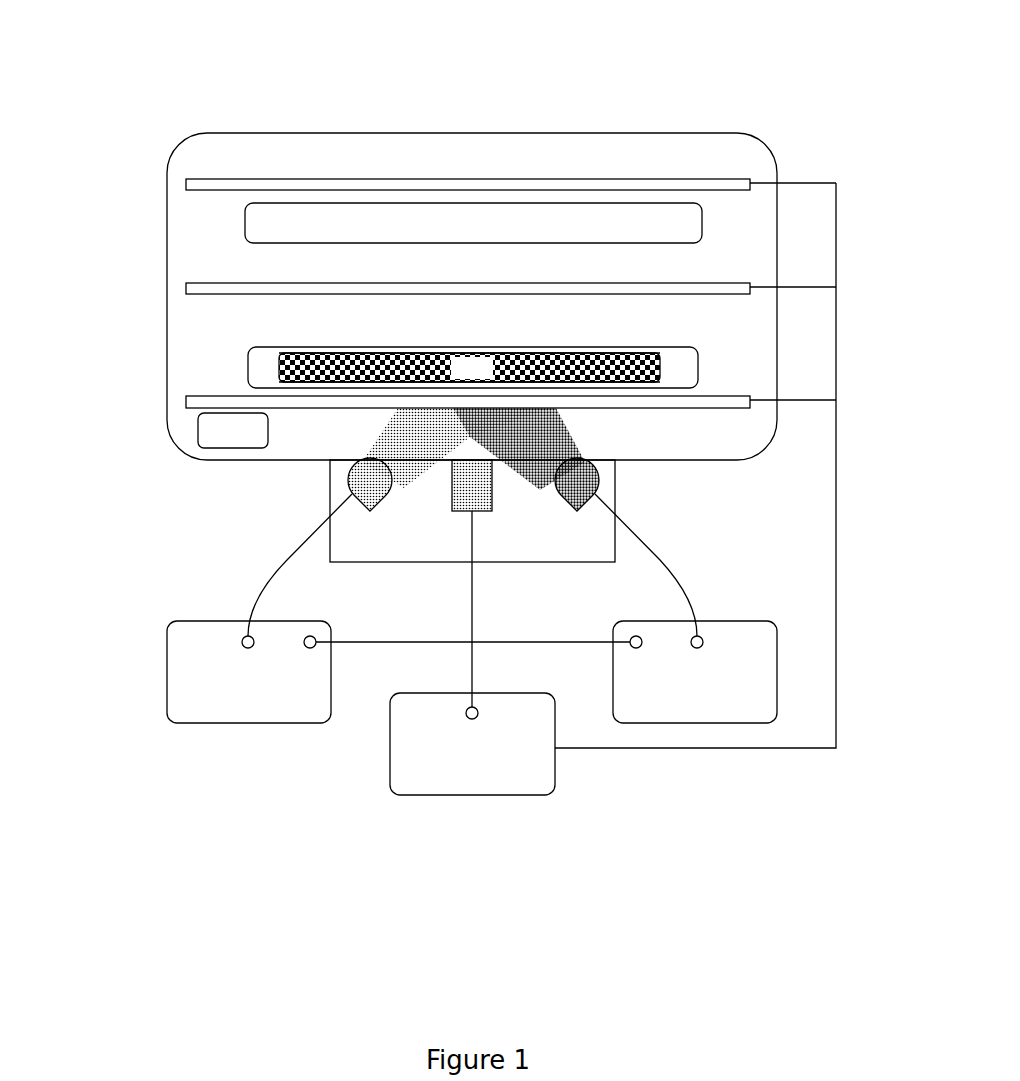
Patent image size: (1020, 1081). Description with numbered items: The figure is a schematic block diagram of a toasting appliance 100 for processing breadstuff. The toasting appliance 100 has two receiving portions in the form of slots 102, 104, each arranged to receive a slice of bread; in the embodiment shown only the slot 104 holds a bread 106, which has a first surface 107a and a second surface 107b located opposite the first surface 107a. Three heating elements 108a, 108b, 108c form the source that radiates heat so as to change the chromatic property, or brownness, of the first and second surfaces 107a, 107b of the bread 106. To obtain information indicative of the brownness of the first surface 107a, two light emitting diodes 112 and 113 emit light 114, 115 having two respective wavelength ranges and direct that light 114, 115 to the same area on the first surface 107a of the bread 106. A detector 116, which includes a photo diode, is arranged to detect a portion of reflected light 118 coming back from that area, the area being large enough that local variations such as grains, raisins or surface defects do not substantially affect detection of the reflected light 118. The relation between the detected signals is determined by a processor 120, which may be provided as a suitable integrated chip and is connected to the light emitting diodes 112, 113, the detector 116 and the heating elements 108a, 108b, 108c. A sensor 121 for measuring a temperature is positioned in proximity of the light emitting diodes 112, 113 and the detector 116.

The toasting appliance 100 is at (602, 92).
The slot 102 is at (244, 225).
The slot 104 is at (250, 367).
The bread 106 is at (469, 367).
The first surface 107a is at (650, 385).
The second surface 107b is at (594, 350).
The heating element 108a is at (187, 180).
The heating element 108b is at (187, 285).
The heating element 108c is at (187, 398).
The light emitting diode 112 is at (349, 481).
The light emitting diode 113 is at (598, 481).
The light 114 is at (398, 429).
The light 115 is at (543, 429).
The detector 116 is at (485, 504).
The reflected light 118 is at (470, 441).
The processor 120 is at (501, 489).
The sensor 121 is at (233, 430).